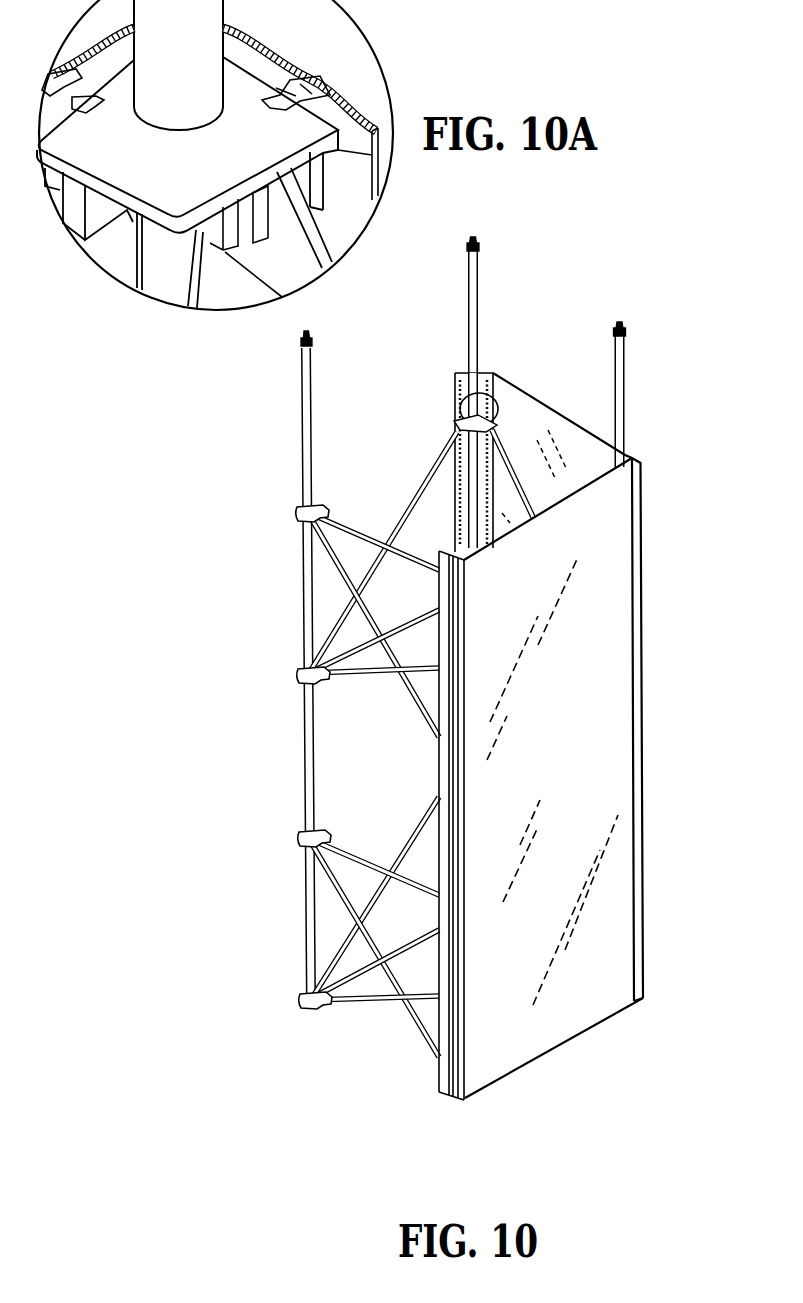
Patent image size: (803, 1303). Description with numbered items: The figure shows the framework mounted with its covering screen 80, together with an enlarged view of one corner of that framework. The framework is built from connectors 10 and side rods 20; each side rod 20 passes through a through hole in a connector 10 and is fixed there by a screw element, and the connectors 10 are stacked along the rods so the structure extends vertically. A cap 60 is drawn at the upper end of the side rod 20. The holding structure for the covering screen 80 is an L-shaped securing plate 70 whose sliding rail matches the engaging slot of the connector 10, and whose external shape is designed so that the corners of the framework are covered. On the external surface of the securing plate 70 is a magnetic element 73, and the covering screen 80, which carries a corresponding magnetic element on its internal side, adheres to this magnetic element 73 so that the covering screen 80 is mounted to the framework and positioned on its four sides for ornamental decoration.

The connector 10 is at (316, 507).
The side rod 20 is at (304, 448).
The post cap 60 is at (301, 349).
The securing plate 70 is at (647, 565).
The magnetic element 73 is at (444, 1102).
The covering screen 80 is at (620, 757).